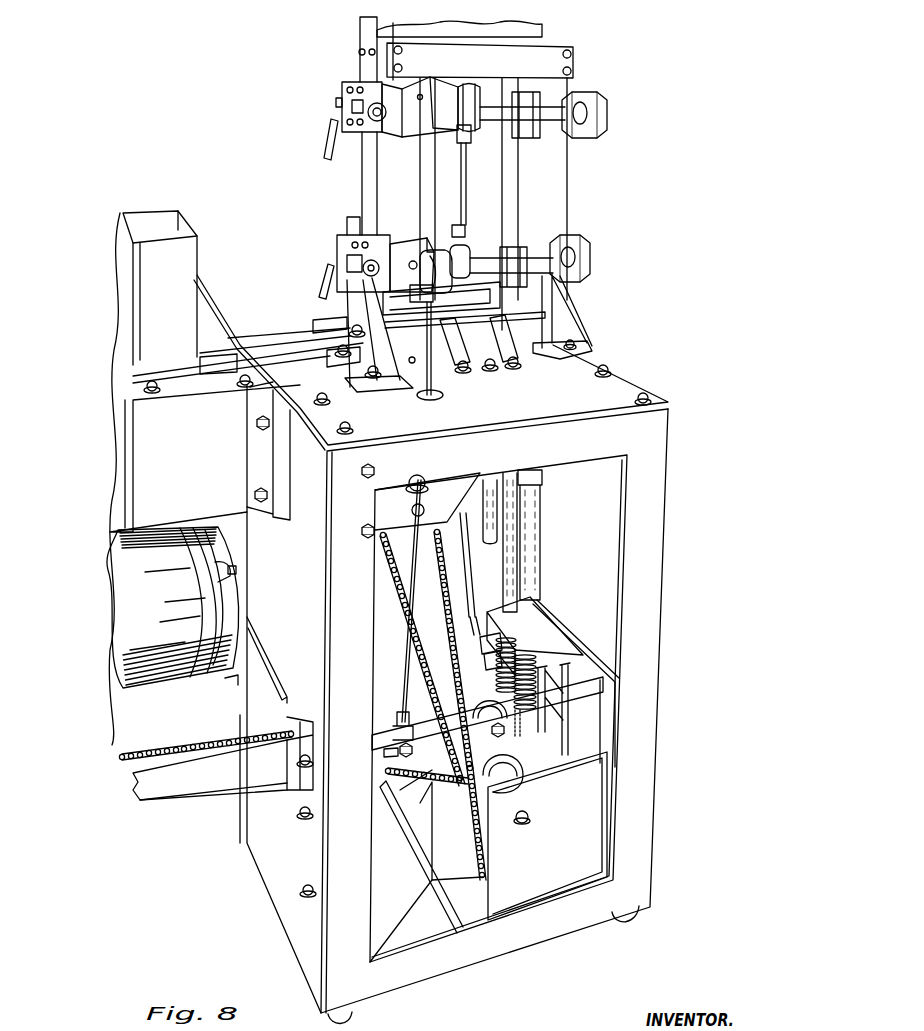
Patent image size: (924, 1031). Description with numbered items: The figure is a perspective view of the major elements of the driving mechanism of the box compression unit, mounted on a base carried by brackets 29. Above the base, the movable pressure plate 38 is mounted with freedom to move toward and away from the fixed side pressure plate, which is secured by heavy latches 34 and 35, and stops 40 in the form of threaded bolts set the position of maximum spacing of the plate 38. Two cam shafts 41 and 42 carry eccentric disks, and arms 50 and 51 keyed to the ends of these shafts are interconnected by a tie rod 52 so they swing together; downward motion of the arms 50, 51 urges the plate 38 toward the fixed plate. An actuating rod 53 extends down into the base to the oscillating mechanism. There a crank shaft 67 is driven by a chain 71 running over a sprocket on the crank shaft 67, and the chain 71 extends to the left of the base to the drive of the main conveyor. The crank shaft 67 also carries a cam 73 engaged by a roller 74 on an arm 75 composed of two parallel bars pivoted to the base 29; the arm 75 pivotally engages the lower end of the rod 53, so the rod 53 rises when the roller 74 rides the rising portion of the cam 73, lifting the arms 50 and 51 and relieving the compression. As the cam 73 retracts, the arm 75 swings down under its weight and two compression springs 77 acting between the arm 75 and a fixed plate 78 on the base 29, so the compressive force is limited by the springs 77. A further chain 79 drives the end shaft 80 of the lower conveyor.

The bracket 29 is at (551, 393).
The latch 34 is at (327, 136).
The latch 35 is at (327, 285).
The pressure plate 38 is at (552, 182).
The stop 40 is at (343, 113).
The cam shaft 41 is at (565, 115).
The cam shaft 42 is at (553, 262).
The arm 50 is at (415, 127).
The arm 51 is at (405, 262).
The tie rod 52 is at (467, 169).
The actuating rod 53 is at (432, 381).
The crank shaft 67 is at (532, 815).
The chain 71 is at (214, 748).
The cam 73 is at (503, 768).
The roller 74 is at (490, 706).
The arm 75 is at (385, 759).
The compression springs 77 is at (518, 690).
The fixed plate 78 is at (525, 625).
The chain 79 is at (397, 608).
The end shaft 80 is at (414, 486).